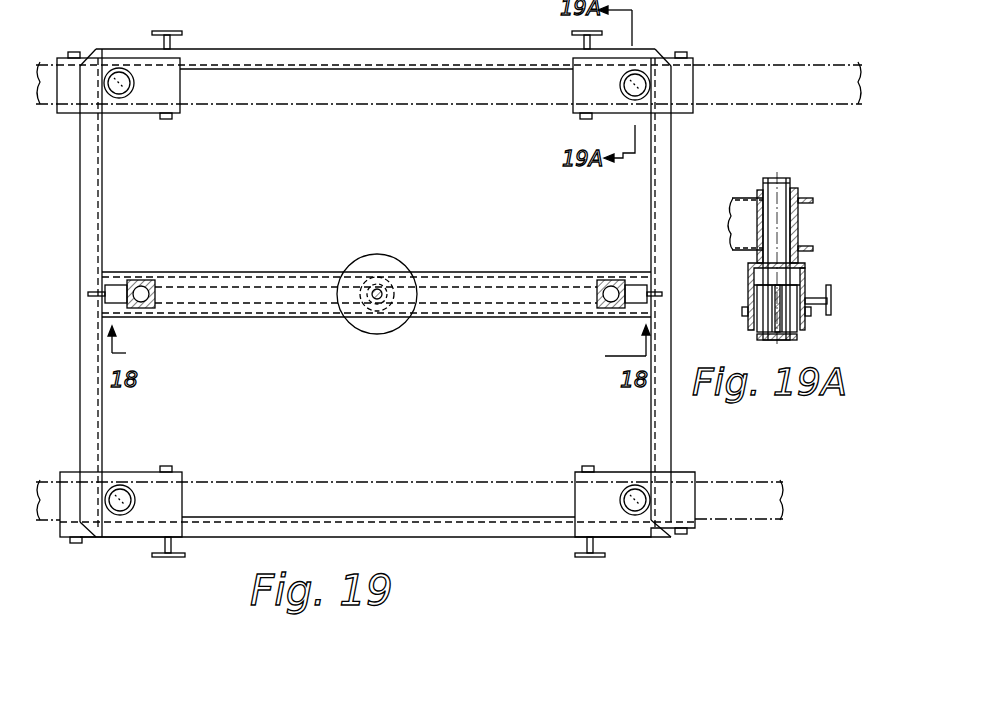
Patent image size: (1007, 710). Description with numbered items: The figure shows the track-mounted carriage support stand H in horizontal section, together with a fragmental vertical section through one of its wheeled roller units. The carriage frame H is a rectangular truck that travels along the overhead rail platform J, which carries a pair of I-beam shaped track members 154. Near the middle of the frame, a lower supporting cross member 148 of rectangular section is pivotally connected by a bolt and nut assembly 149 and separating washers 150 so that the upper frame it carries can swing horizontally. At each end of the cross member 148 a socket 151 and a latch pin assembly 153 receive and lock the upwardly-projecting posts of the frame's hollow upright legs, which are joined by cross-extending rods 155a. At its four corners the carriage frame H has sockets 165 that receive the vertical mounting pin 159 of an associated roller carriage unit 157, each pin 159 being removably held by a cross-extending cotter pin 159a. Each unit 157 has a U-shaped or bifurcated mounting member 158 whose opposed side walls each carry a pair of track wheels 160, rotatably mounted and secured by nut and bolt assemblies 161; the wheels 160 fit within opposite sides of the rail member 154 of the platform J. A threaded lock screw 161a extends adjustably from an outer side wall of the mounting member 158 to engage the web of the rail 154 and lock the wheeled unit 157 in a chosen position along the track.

In FIG. 19, the carriage frame H is at (103, 432).
In FIG. 19A, the carriage frame H is at (733, 193).
In FIG. 19, the rail platform J is at (789, 62).
In FIG. 19A, the rail platform J is at (786, 340).
In FIG. 19, the lower supporting cross member 148 is at (280, 318).
In FIG. 19, the bolt and nut assembly 149 is at (382, 290).
In FIG. 19, the separating washers 150 is at (385, 254).
In FIG. 19, the socket 151 is at (150, 282).
In FIG. 19, the latch pin assembly 153 is at (120, 285).
In FIG. 19A, the track member 154 is at (765, 340).
In FIG. 19, the cross-extending rods 155a is at (240, 288).
In FIG. 19, the roller carriage unit 157 is at (762, 51).
In FIG. 19A, the roller carriage unit 157 is at (744, 271).
In FIG. 19A, the mounting member 158 is at (750, 288).
In FIG. 19, the vertical mounting pin 159 is at (633, 513).
In FIG. 19A, the vertical mounting pin 159 is at (775, 178).
In FIG. 19A, the cotter pin 159a is at (795, 183).
In FIG. 19A, the track wheels 160 is at (758, 327).
In FIG. 19A, the nut and bolt assemblies 161 is at (742, 312).
In FIG. 19, the threaded lock screw 161a is at (570, 33).
In FIG. 19A, the threaded lock screw 161a is at (828, 286).
In FIG. 19, the sockets 165 is at (130, 510).
In FIG. 19A, the sockets 165 is at (800, 228).